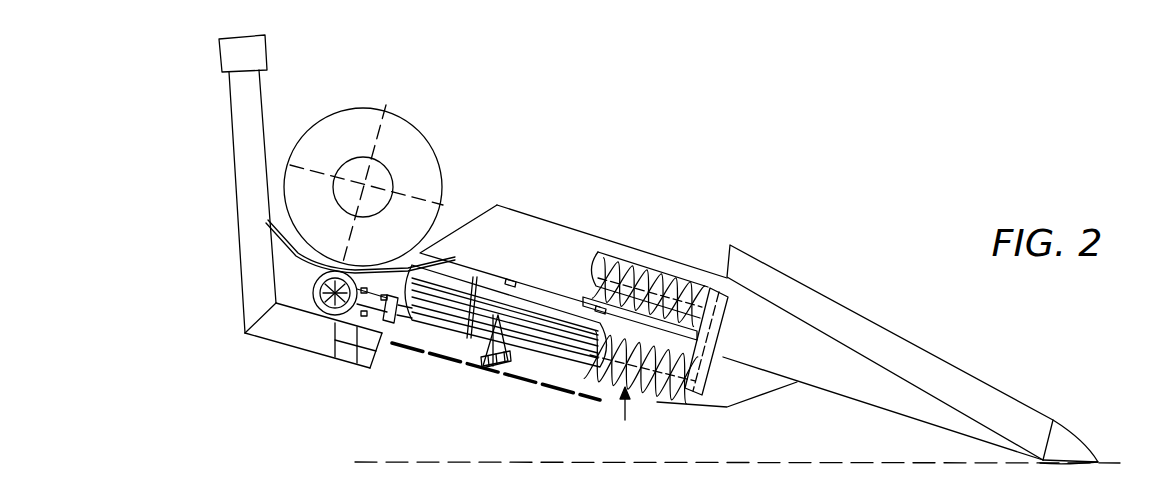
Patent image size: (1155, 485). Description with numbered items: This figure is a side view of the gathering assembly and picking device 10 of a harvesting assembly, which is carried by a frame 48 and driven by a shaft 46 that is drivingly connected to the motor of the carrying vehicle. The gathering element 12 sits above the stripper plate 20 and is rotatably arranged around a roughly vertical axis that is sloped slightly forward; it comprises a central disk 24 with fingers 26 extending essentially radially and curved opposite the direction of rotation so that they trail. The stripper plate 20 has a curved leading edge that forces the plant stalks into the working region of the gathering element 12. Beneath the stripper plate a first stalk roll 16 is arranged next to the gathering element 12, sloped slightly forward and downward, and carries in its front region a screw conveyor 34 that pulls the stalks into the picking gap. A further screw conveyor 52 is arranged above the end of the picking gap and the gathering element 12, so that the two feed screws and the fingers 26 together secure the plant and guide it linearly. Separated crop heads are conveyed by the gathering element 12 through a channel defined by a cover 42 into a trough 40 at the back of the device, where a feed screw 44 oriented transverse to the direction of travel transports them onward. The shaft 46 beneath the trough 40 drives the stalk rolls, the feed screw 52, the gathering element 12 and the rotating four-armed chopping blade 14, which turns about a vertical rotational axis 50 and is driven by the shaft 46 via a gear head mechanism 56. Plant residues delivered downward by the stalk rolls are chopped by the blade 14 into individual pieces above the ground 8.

The ground surface 8 is at (751, 464).
The gathering assembly and picking device 10 is at (910, 365).
The gathering element 12 is at (543, 274).
The chopping blade 14 is at (567, 396).
The first stalk roll 16 is at (624, 422).
The stripper plate 20 is at (613, 238).
The central disk 24 is at (585, 315).
The fingers 26 is at (478, 277).
The screw conveyor 34 is at (658, 385).
The trough 40 is at (276, 301).
The cover 42 is at (470, 227).
The feed screw 44 is at (330, 138).
The shaft 46 is at (330, 307).
The frame 48 is at (246, 197).
The vertical rotational axis 50 is at (494, 372).
The screw conveyor 52 is at (672, 288).
The gear head mechanism 56 is at (490, 362).